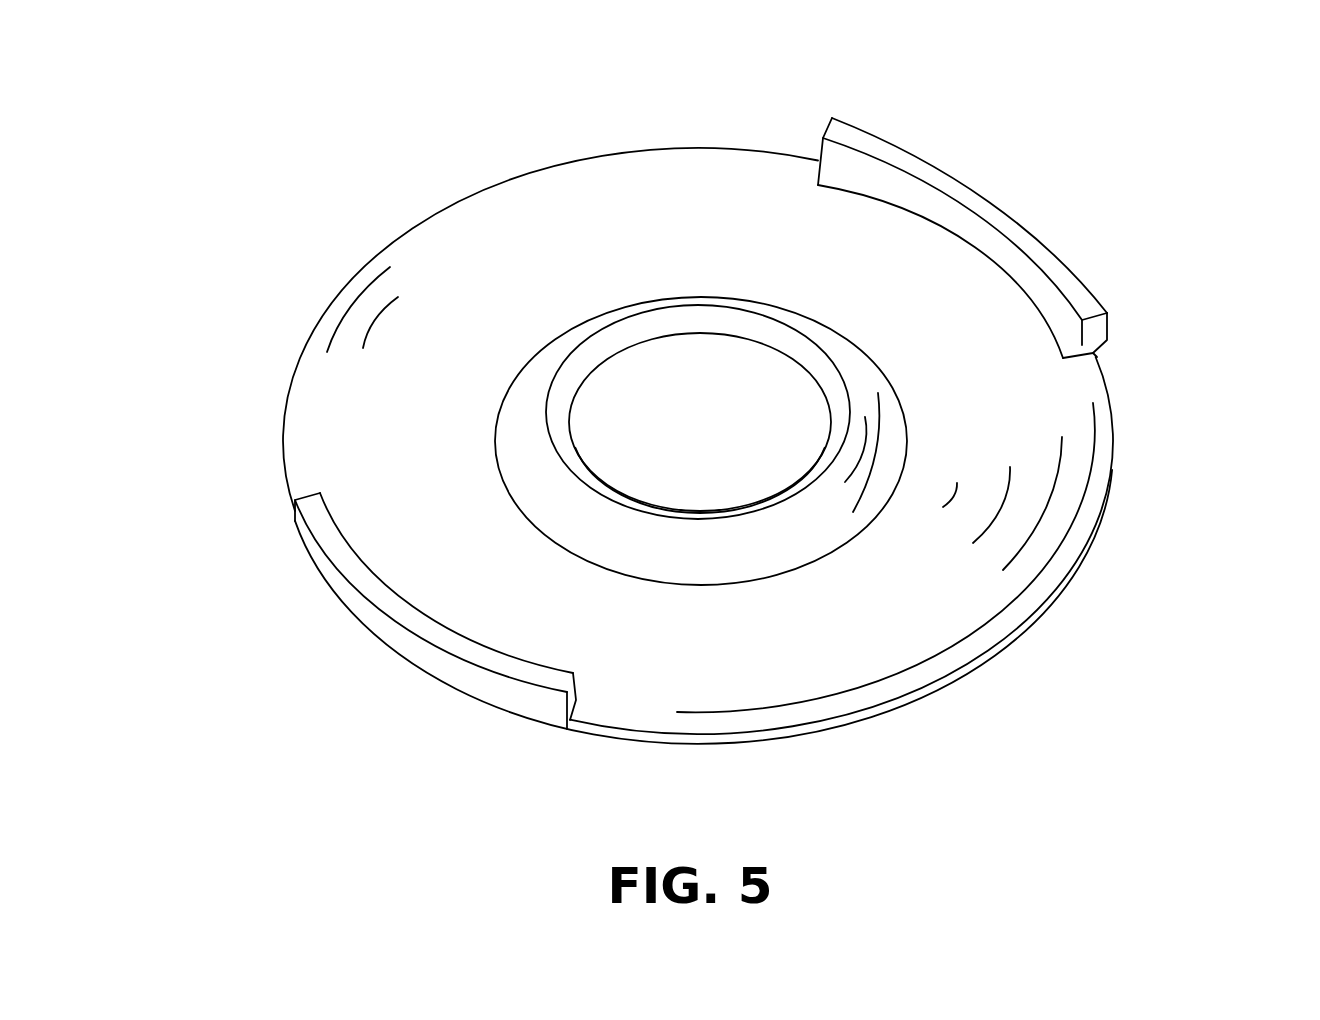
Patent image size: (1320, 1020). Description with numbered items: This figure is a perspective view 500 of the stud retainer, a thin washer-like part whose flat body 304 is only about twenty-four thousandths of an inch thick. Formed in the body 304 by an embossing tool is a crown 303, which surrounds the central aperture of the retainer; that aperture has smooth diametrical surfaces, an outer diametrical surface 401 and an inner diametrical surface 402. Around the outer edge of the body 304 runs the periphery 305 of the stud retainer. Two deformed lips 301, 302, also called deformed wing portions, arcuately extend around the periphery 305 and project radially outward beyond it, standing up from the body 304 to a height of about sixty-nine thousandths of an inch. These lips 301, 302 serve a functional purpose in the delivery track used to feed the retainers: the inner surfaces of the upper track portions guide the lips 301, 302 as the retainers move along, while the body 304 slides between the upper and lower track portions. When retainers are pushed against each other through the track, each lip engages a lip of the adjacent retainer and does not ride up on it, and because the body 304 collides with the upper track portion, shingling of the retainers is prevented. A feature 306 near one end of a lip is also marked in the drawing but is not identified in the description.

The perspective view 500 is at (418, 173).
The deformed lip 301 is at (337, 545).
The deformed lip 302 is at (962, 178).
The crown 303 is at (528, 405).
The body 304 is at (573, 230).
The periphery 305 is at (903, 703).
The tab end face 306 is at (1108, 343).
The outer diametrical surface 401 is at (633, 317).
The inner diametrical surface 402 is at (615, 355).